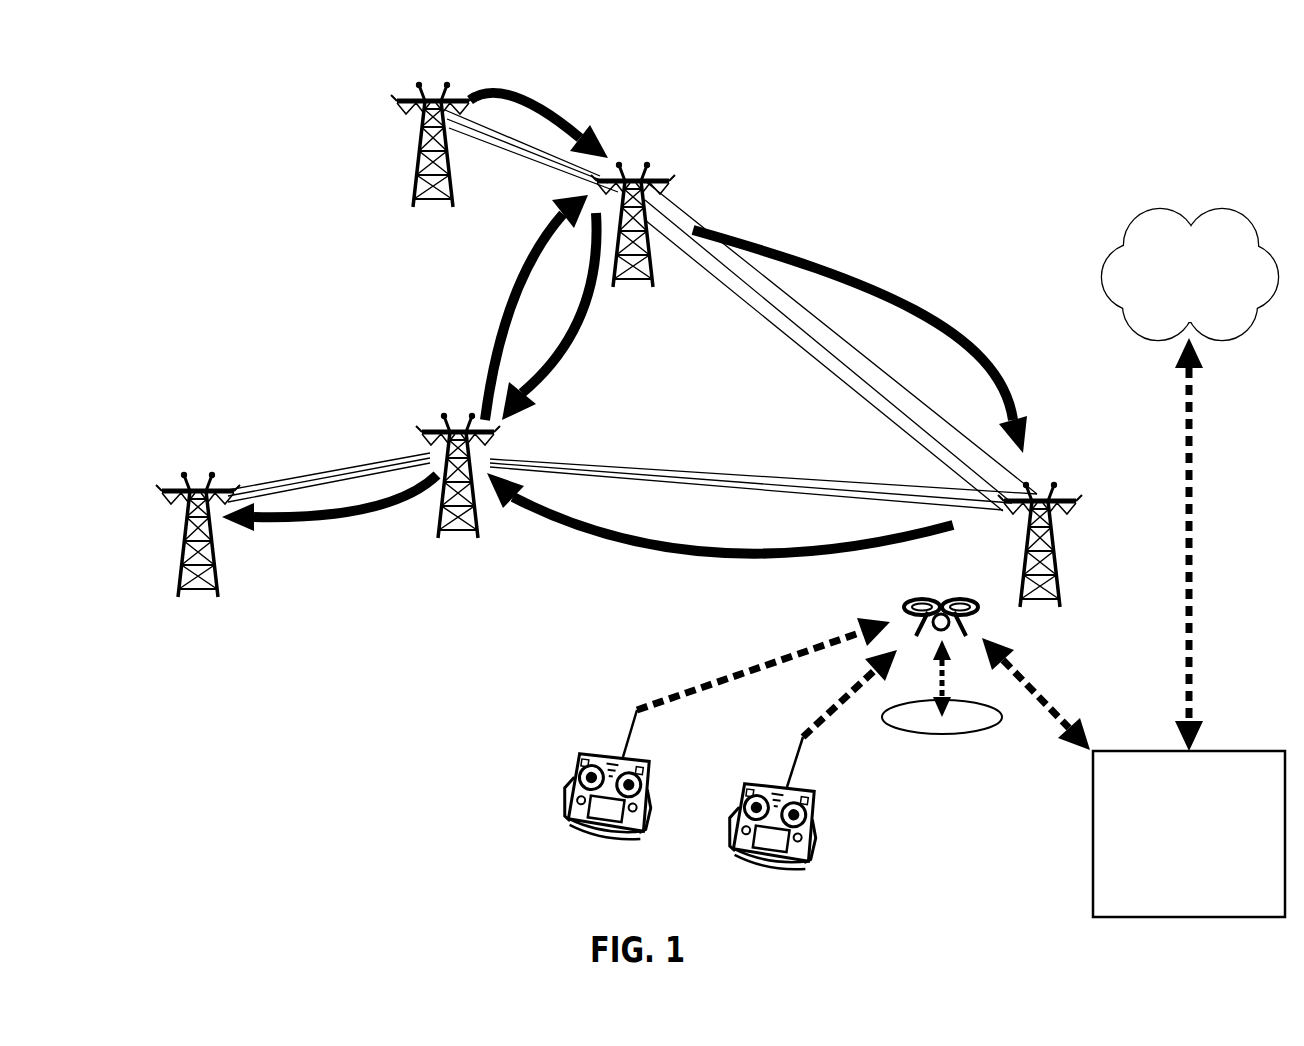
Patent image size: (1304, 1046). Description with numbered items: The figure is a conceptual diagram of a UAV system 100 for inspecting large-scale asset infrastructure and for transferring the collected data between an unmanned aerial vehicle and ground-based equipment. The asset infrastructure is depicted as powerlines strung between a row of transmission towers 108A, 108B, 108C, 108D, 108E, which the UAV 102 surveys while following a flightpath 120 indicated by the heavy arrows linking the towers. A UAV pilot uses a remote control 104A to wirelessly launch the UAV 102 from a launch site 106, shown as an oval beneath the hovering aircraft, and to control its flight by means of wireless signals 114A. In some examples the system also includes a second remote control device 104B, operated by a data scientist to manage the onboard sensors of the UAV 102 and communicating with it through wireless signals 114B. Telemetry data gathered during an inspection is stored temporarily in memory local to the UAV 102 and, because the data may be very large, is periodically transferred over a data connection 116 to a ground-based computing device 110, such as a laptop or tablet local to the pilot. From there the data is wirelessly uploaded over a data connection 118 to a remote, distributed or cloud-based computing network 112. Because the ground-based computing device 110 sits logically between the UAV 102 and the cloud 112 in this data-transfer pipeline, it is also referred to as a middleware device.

The UAV system 100 is at (230, 78).
The UAV 102 is at (941, 596).
The remote control 104A is at (593, 757).
The second remote control device 104B is at (758, 785).
The launch site 106 is at (942, 732).
The transmission tower 108A is at (1040, 564).
The transmission tower 108B is at (458, 500).
The transmission tower 108C is at (633, 240).
The transmission tower 108D is at (433, 163).
The transmission tower 108E is at (198, 551).
The ground-based computing device 110 is at (1209, 845).
The cloud-based computing network 112 is at (1209, 287).
The wireless signals 114A is at (710, 685).
The wireless signals 114B is at (822, 725).
The data connection 116 is at (1060, 715).
The data connection 118 is at (1193, 558).
The flightpath 120 is at (850, 272).